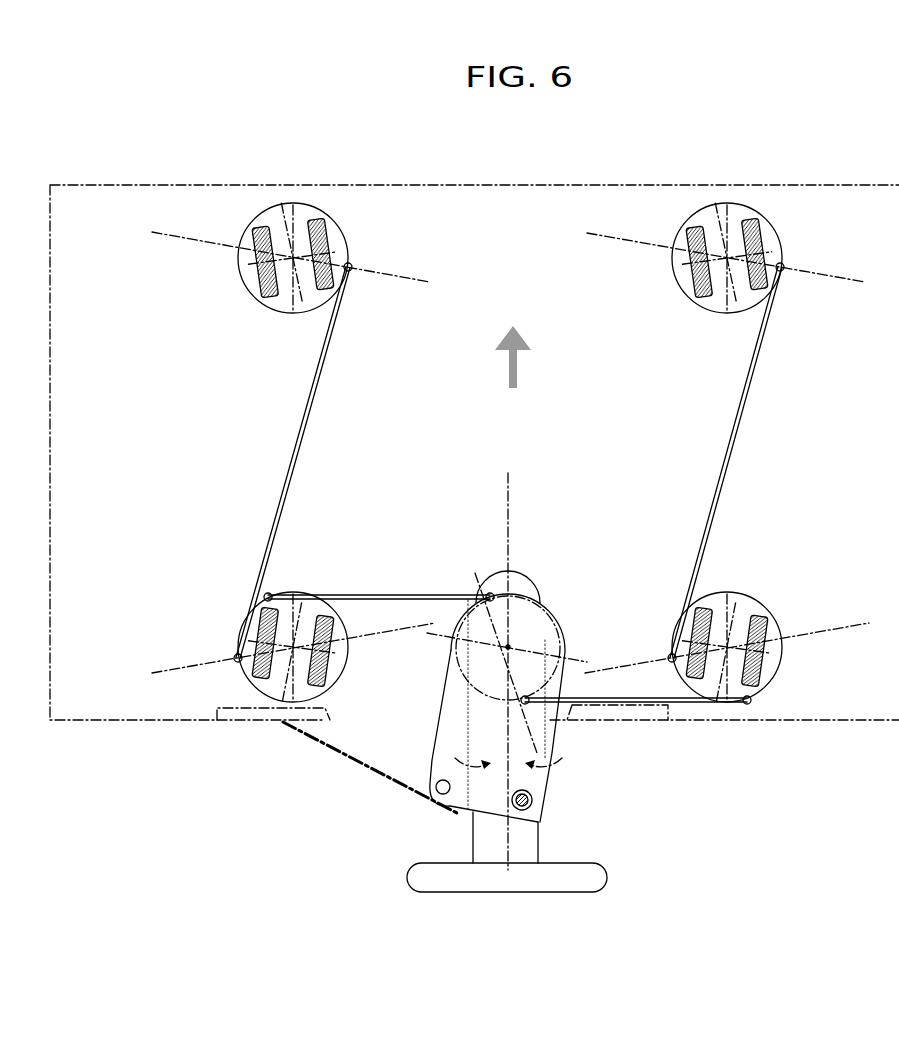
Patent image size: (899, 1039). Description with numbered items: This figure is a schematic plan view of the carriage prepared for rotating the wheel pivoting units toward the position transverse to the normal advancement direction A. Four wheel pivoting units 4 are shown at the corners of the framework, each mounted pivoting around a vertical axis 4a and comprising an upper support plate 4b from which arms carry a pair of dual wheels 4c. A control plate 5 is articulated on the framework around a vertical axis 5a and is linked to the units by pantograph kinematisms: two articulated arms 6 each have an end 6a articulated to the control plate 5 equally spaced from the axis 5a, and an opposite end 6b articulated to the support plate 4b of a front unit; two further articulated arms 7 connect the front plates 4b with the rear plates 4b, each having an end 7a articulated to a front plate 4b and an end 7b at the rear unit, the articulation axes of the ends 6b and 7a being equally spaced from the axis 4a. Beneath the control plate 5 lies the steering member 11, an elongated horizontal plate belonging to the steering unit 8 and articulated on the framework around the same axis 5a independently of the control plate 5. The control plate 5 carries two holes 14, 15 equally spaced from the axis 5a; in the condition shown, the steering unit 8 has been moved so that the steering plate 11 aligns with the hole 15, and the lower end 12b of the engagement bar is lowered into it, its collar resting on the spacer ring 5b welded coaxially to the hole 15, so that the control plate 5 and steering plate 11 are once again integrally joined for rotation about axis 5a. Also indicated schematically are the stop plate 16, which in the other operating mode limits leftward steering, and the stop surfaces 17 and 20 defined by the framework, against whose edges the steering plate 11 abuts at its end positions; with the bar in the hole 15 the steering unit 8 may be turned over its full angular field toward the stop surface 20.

The wheel pivoting unit 4 is at (226, 289).
The vertical axis 4a is at (281, 203).
The upper support plate 4b is at (263, 228).
The dual wheels 4c is at (320, 285).
The control plate 5 is at (443, 733).
The vertical axis 5a is at (515, 645).
The spacer ring 5b is at (540, 836).
The articulated arm 6 is at (397, 595).
The end of arm 6 6a is at (490, 593).
The opposite end of arm 6 6b is at (269, 593).
The articulated arm 7 is at (298, 410).
The end of arm 7 7a is at (235, 655).
The end of arm 7 7b is at (350, 265).
The steering unit 8 is at (620, 888).
The steering member 11 is at (490, 845).
The lower end of the vertical bar 12b is at (545, 772).
The hole 14 is at (436, 788).
The hole 15 is at (533, 800).
The stop plate 16 is at (377, 760).
The stop surface 17 is at (560, 735).
The stop surface 20 is at (327, 728).
The normal advancement direction A is at (521, 362).